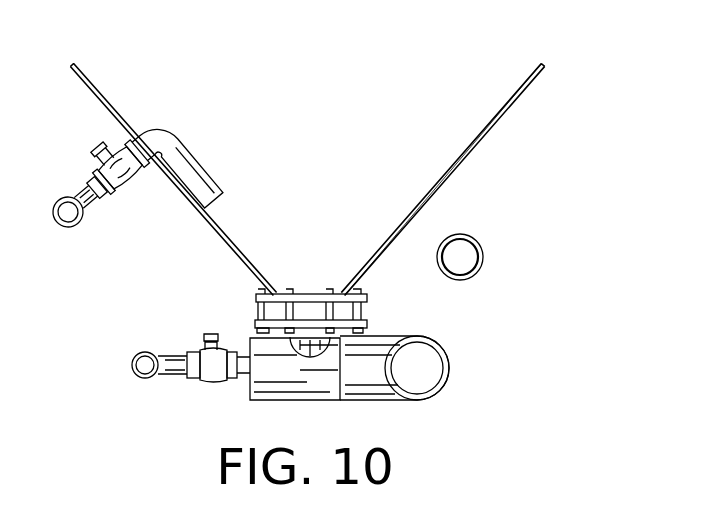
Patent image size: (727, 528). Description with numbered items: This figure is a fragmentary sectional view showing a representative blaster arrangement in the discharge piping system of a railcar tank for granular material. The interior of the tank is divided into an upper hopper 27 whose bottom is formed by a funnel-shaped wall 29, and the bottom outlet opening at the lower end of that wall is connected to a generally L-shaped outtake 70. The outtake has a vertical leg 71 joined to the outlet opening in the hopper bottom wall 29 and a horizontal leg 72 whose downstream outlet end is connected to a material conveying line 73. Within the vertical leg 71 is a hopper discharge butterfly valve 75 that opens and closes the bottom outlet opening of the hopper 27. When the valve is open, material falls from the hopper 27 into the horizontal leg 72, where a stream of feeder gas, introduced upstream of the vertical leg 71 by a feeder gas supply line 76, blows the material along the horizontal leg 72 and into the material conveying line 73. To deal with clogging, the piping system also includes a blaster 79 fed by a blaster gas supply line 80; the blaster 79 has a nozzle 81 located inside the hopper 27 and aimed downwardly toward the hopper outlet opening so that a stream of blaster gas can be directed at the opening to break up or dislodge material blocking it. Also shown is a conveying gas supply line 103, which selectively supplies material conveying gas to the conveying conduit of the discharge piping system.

The upper hopper 27 is at (530, 93).
The funnel-shaped wall 29 is at (482, 142).
The outtake 70 is at (324, 388).
The vertical leg 71 is at (257, 311).
The horizontal leg 72 is at (378, 388).
The material conveying line 73 is at (422, 366).
The hopper discharge butterfly valve 75 is at (312, 357).
The feeder gas supply line 76 is at (147, 352).
The blaster 79 is at (148, 171).
The blaster gas supply line 80 is at (70, 214).
The nozzle 81 is at (203, 162).
The conveying gas supply line 103 is at (469, 254).